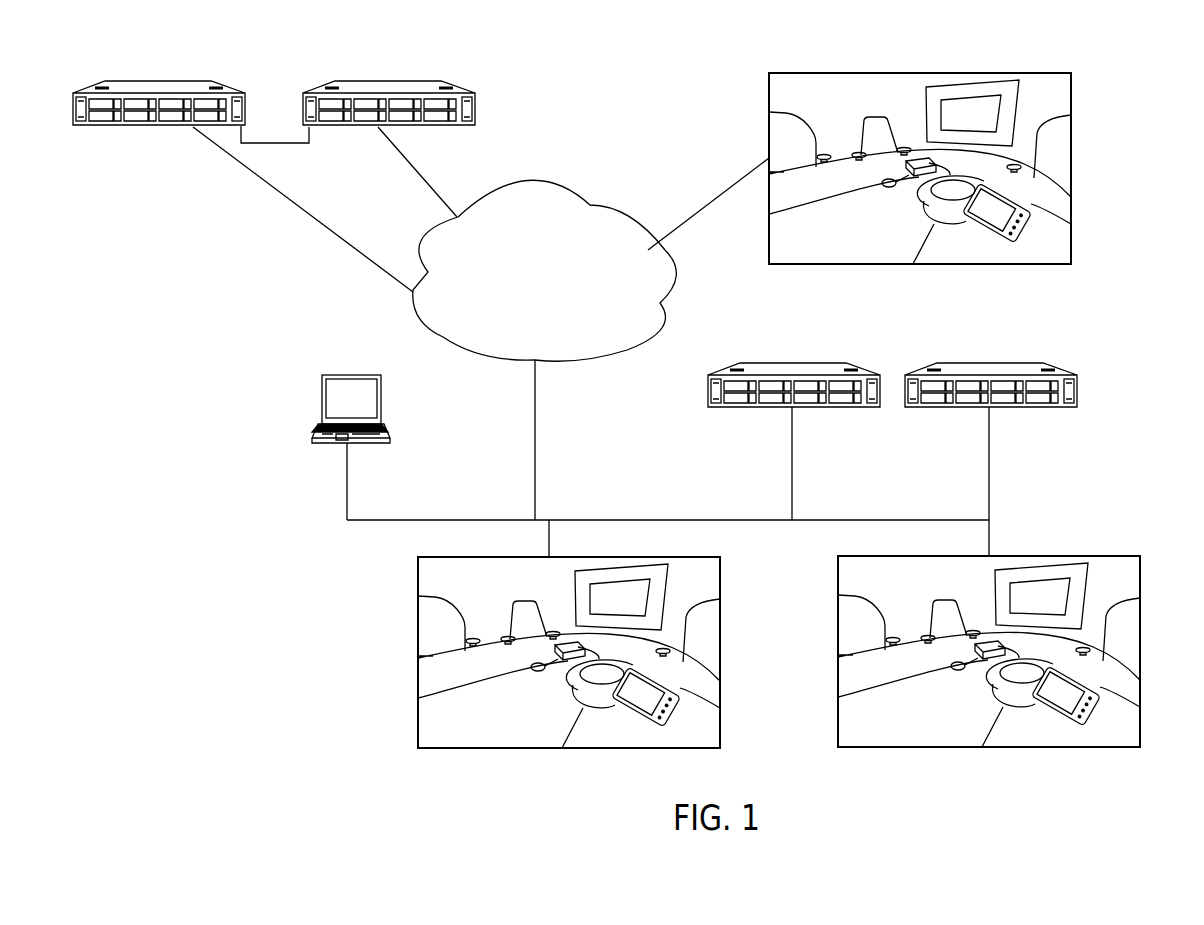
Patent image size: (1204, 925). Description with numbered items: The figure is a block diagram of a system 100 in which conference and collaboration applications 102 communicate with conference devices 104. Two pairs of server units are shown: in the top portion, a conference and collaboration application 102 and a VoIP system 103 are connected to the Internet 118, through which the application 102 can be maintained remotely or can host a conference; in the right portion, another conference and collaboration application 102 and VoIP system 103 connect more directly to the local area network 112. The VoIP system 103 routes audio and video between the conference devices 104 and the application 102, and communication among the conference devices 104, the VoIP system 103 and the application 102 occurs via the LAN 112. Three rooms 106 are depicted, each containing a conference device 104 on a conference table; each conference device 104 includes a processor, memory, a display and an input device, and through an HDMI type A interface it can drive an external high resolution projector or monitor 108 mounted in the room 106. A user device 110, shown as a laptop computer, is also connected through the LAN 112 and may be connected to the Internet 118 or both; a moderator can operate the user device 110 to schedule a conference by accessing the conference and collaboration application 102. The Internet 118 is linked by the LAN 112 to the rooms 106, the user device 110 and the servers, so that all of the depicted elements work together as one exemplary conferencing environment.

The system 100 is at (642, 60).
The conference and collaboration application 102 is at (470, 93).
The VoIP system 103 is at (244, 93).
The conference device 104 is at (1003, 243).
The room 106 is at (1072, 160).
The monitor 108 is at (1020, 82).
The user device 110 is at (322, 398).
The local area network 112 is at (308, 144).
The Internet 118 is at (563, 313).